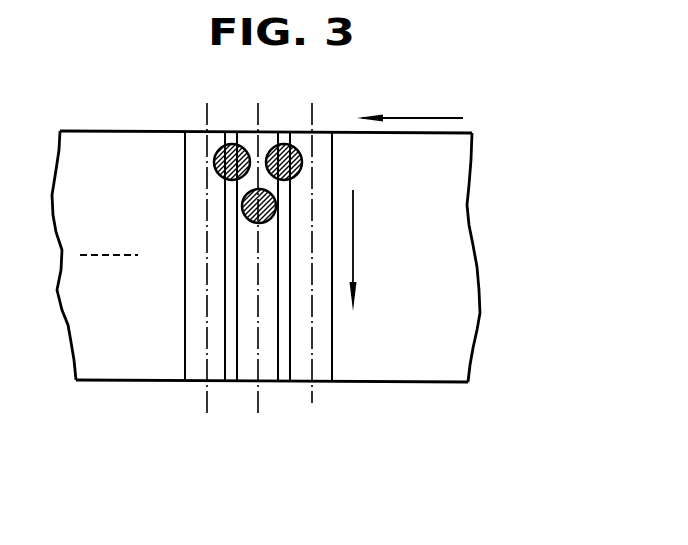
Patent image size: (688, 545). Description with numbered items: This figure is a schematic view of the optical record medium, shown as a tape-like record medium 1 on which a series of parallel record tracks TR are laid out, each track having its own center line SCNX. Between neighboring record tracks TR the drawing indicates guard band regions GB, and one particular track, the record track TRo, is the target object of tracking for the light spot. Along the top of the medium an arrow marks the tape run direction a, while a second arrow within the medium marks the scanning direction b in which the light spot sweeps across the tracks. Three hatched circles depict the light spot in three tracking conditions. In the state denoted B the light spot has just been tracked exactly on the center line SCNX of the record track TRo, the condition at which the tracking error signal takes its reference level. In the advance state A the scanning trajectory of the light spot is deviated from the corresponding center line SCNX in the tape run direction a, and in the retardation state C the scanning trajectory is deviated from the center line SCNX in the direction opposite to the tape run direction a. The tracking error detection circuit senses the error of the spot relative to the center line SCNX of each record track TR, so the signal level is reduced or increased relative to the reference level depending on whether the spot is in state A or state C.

The magnetic tape 1 is at (92, 137).
The advance state A is at (232, 144).
The on-track state B is at (253, 223).
The retardation state C is at (283, 144).
The center line SCNX is at (312, 128).
The tape run direction a is at (422, 118).
The scanning direction b is at (353, 219).
The guard band GB is at (232, 382).
The record track TR is at (275, 382).
The record track TRo is at (250, 382).